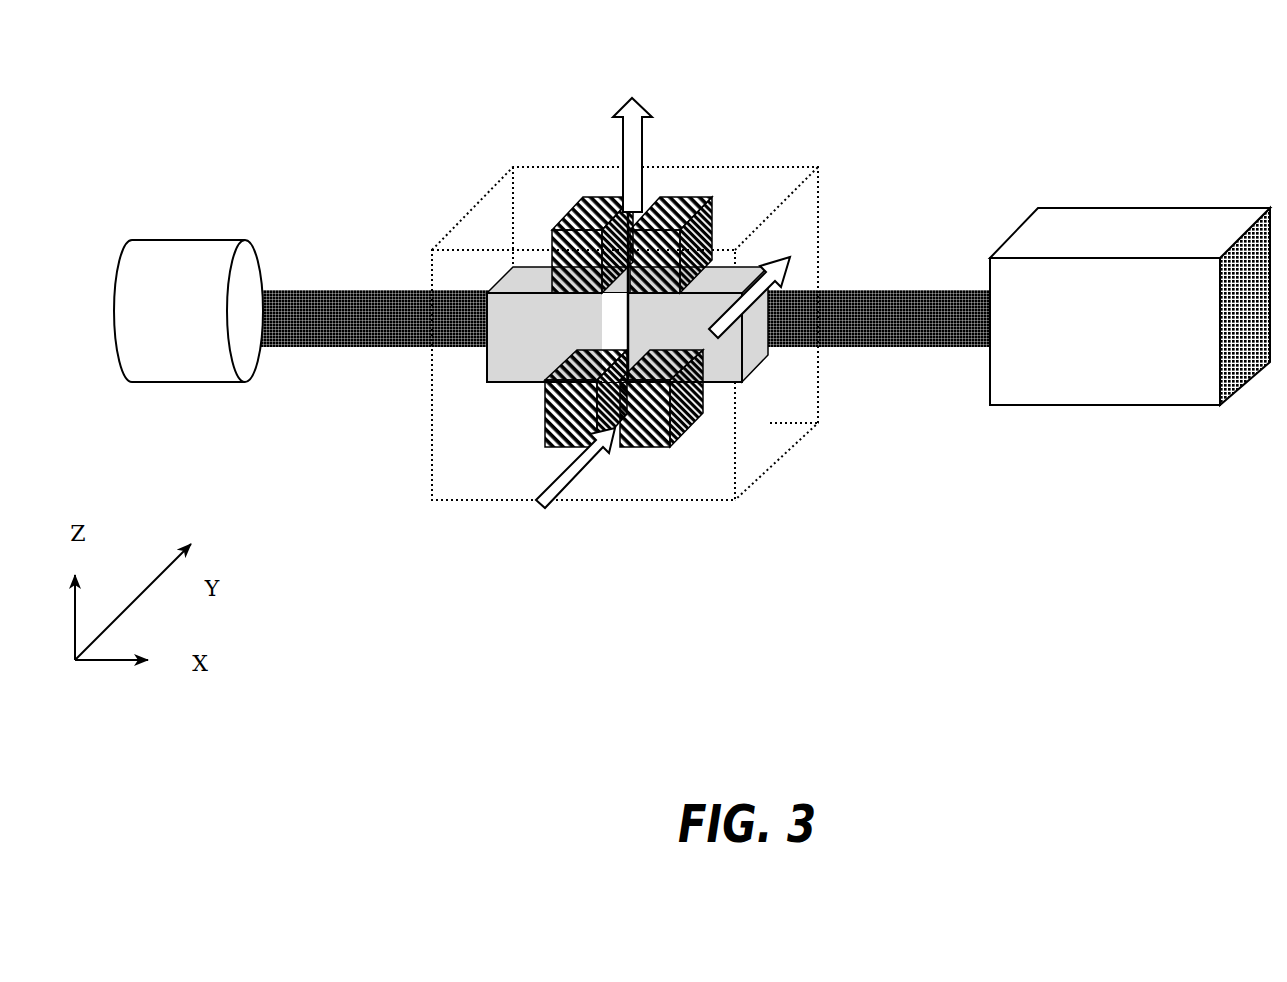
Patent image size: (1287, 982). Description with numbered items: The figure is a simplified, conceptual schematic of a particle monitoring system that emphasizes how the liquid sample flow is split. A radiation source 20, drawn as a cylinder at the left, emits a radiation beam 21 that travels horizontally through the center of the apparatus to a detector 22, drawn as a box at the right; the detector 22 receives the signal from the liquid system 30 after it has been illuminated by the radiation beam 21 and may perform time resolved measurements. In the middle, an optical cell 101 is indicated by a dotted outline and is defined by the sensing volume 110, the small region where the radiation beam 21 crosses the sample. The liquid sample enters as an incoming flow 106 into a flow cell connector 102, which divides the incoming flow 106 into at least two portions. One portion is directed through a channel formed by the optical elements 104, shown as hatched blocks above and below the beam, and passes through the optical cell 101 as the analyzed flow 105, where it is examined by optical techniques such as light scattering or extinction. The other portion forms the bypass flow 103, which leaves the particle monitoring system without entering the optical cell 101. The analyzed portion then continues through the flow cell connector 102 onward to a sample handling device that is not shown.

The radiation source 20 is at (186, 230).
The radiation beam 21 is at (388, 345).
The detector 22 is at (1089, 188).
The liquid system 30 is at (590, 321).
The optical cell 101 is at (456, 212).
The flow cell connector 102 is at (679, 410).
The bypass flow 103 is at (803, 261).
The optical elements 104 is at (515, 386).
The analyzed flow 105 is at (655, 155).
The incoming flow 106 is at (567, 499).
The sensing volume 110 is at (657, 317).